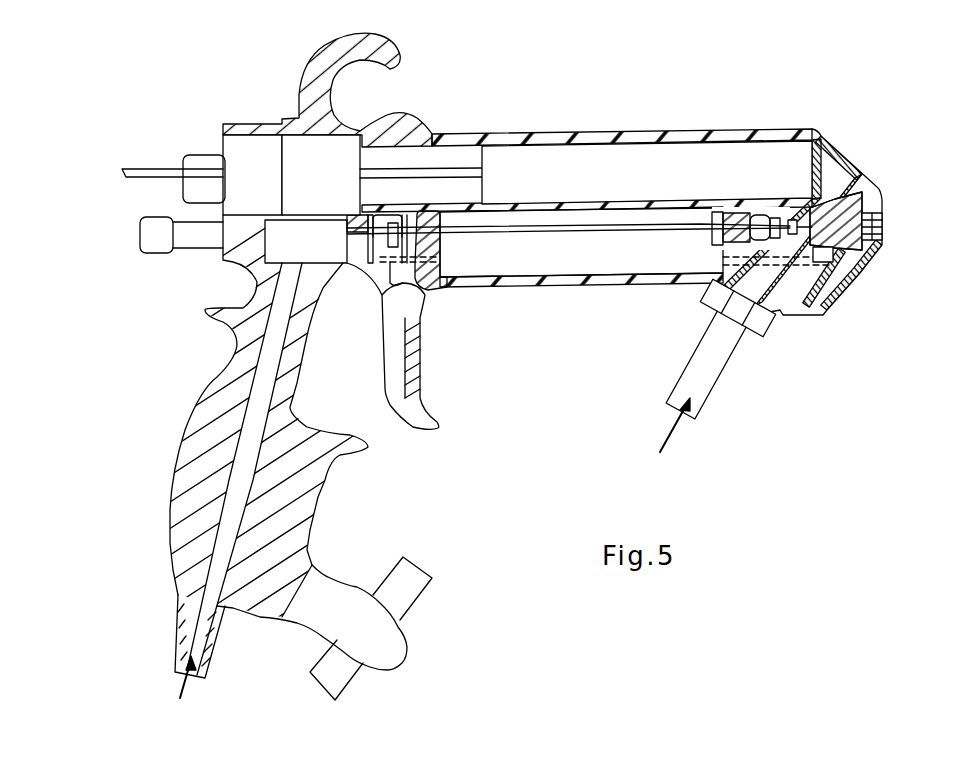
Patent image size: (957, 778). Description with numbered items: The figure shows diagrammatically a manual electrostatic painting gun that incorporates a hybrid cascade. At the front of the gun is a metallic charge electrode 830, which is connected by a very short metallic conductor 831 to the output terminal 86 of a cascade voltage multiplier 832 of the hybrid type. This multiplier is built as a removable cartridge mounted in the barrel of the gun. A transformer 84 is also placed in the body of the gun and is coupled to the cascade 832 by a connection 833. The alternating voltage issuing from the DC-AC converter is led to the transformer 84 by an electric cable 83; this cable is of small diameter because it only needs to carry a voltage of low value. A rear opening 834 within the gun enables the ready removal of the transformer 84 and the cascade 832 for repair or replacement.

The electric cable 83 is at (136, 181).
The rear opening 834 is at (222, 152).
The transformer 84 is at (338, 152).
The connection 833 is at (467, 163).
The cascade voltage multiplier 832 is at (623, 170).
The output terminal 86 is at (817, 170).
The metallic conductor 831 is at (858, 140).
The charge electrode 830 is at (877, 188).